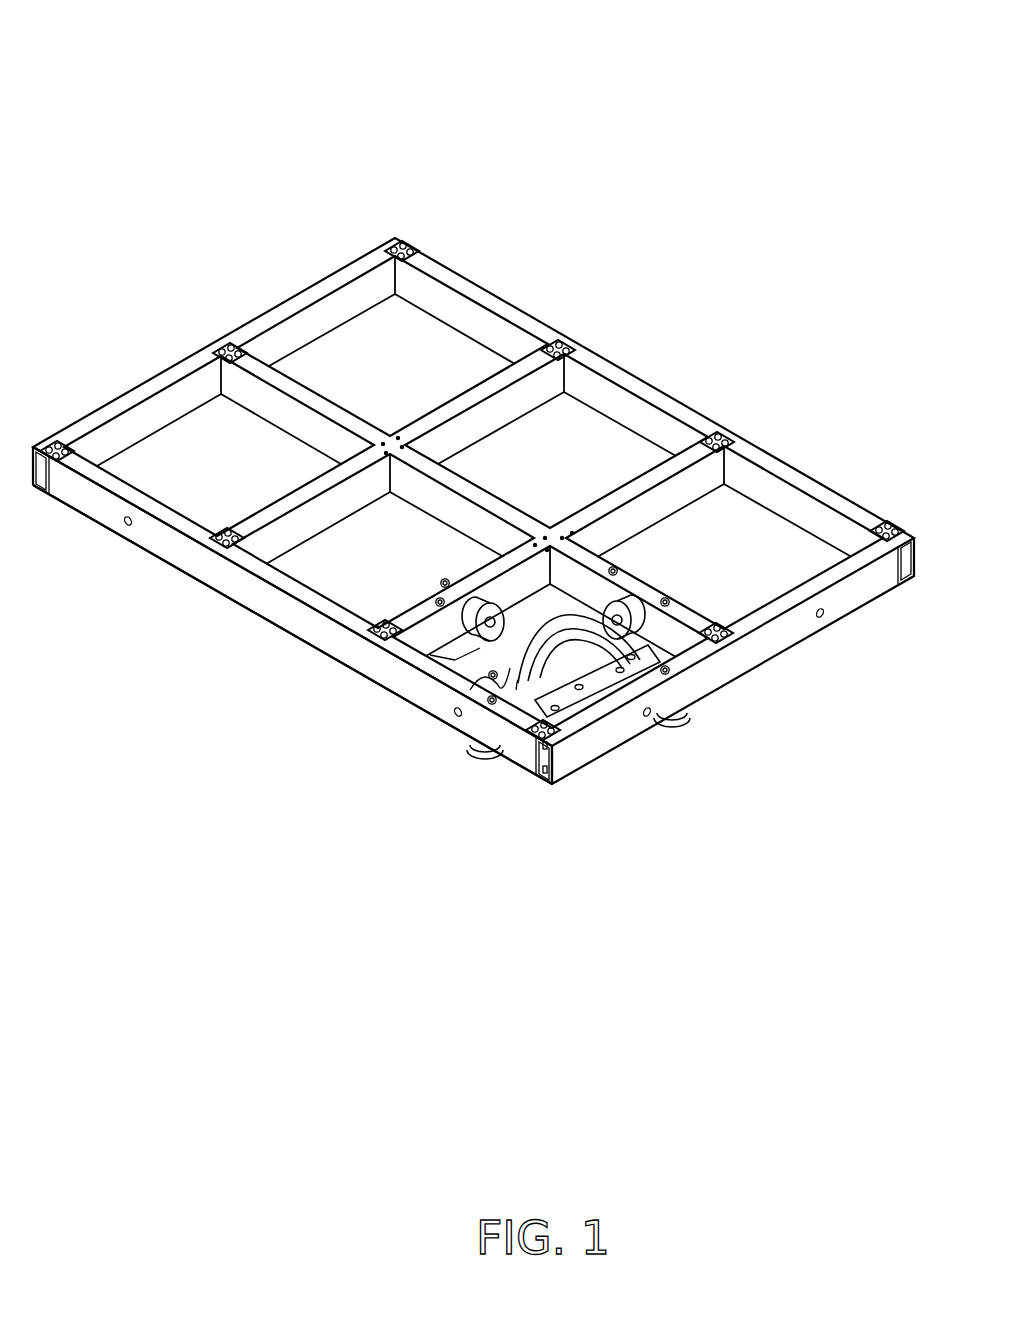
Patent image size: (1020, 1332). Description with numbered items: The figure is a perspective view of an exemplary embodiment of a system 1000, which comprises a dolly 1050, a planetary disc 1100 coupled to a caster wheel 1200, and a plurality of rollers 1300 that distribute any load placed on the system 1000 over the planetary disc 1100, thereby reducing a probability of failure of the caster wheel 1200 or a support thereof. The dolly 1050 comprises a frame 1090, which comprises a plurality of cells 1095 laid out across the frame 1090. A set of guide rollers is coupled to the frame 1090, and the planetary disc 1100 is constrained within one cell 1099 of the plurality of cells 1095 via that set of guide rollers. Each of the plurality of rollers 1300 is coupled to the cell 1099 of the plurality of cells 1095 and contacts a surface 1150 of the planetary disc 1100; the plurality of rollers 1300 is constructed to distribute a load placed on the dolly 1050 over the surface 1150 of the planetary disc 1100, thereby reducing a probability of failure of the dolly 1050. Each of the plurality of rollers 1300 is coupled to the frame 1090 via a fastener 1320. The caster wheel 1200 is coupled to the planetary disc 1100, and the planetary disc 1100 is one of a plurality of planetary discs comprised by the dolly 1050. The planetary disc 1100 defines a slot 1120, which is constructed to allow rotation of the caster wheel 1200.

The system 1000 is at (135, 24).
The dolly 1050 is at (194, 553).
The frame 1090 is at (80, 512).
The plurality of cells 1095 is at (240, 457).
The cell 1099 is at (303, 528).
The planetary disc 1100 is at (652, 668).
The slot 1120 is at (552, 652).
The surface 1150 is at (475, 658).
The caster wheel 1200 is at (520, 683).
The plurality of rollers 1300 is at (482, 603).
The fastener 1320 is at (437, 583).